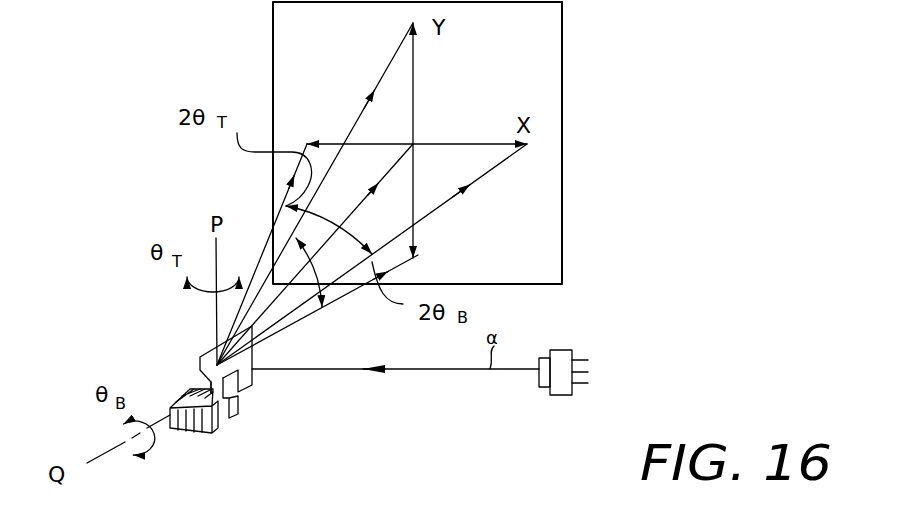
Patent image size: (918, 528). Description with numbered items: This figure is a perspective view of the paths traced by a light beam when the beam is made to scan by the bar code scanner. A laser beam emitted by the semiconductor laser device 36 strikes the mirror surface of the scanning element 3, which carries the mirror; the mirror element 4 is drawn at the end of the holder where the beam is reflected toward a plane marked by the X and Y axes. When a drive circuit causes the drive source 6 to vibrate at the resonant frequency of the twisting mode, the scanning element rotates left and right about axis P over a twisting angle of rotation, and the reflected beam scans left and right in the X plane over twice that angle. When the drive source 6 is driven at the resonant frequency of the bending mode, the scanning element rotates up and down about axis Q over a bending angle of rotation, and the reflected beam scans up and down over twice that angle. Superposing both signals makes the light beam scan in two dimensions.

The scanning element 3 is at (254, 366).
The mirror 4 is at (203, 366).
The drive source 6 is at (238, 408).
The semiconductor laser device 36 is at (562, 352).